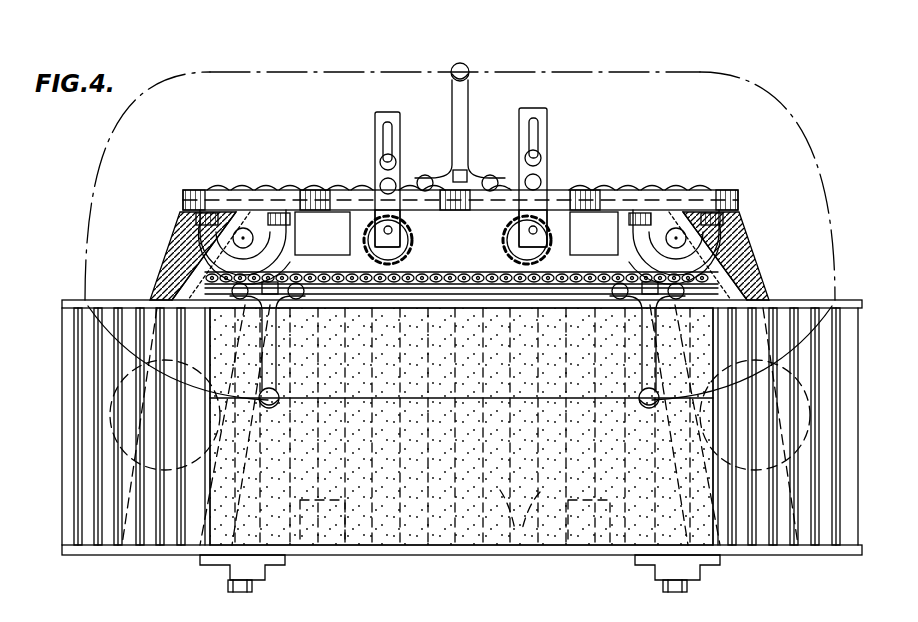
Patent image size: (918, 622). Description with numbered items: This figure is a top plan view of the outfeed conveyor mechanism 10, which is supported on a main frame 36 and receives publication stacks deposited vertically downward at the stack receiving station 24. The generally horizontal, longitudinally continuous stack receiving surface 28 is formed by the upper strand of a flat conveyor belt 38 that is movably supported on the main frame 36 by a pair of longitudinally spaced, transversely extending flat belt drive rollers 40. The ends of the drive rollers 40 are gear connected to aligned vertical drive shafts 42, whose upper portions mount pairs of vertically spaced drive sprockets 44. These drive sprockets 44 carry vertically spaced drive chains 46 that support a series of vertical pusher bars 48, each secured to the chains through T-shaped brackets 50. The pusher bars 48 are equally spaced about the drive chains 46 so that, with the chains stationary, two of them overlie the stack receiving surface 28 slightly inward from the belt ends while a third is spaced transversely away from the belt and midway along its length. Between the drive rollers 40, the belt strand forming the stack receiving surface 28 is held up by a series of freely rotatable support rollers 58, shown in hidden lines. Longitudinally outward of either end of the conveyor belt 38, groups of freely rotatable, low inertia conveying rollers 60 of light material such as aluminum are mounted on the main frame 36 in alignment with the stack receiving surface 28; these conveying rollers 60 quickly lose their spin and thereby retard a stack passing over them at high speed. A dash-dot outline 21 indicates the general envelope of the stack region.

The outfeed conveyor mechanism 10 is at (87, 300).
The workpiece outline 21 is at (392, 620).
The stack receiving station 24 is at (545, 560).
The stack receiving surface 28 is at (412, 439).
The main frame 36 is at (122, 556).
The flat conveyor belt 38 is at (402, 535).
The flat belt drive rollers 40 is at (225, 560).
The vertical drive shafts 42 is at (246, 228).
The drive sprockets 44 is at (283, 252).
The drive chains 46 is at (322, 190).
The vertical pusher bars 48 is at (470, 80).
The T-shaped brackets 50 is at (458, 140).
The support rollers 58 is at (518, 535).
The conveying rollers 60 is at (106, 470).